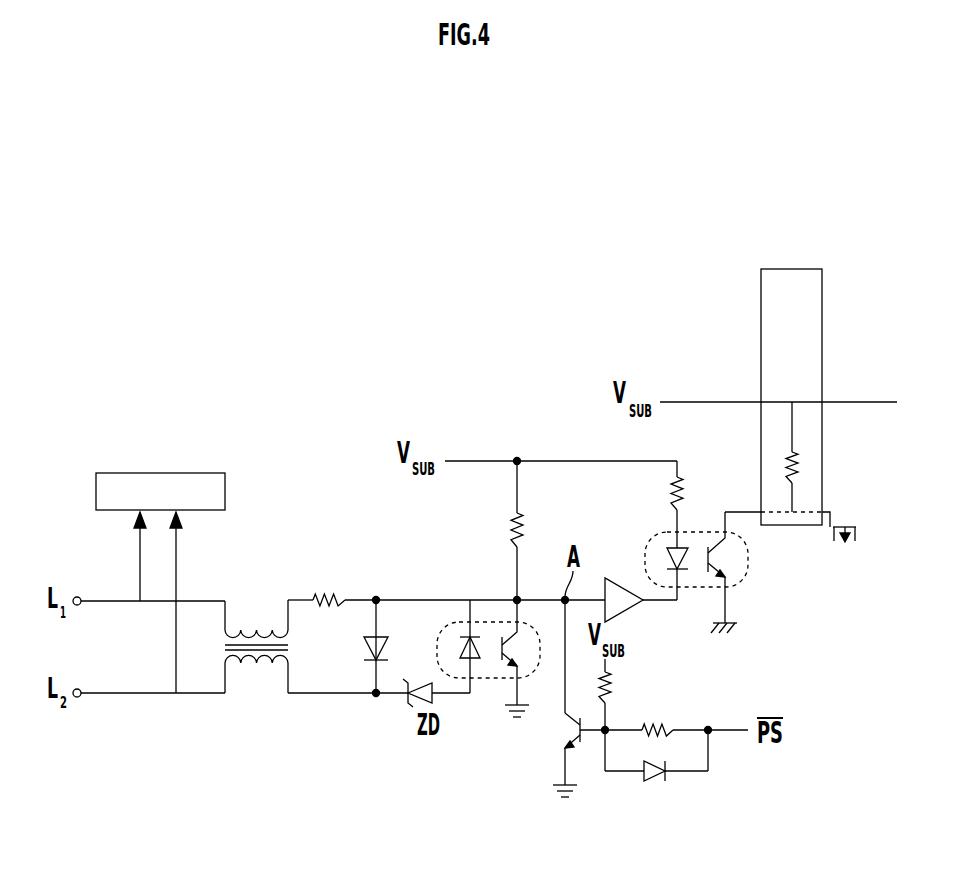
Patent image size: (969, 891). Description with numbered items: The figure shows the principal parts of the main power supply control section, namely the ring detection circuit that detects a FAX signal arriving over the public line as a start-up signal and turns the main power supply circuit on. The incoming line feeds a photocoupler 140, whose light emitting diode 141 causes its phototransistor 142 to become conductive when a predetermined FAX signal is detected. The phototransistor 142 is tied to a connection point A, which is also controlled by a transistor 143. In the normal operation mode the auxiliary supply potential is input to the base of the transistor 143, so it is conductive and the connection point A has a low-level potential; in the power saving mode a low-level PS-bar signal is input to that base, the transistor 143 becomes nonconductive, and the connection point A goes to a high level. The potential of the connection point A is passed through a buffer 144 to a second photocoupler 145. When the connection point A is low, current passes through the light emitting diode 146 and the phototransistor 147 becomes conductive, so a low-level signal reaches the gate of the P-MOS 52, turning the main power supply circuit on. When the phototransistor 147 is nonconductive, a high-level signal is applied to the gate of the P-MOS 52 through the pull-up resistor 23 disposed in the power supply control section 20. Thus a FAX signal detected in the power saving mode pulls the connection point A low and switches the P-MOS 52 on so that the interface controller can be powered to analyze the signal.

The power supply control section 20 is at (225, 473).
The pull-up resistor 23 is at (790, 460).
The P-MOS 52 is at (848, 524).
The photocoupler 140 is at (498, 652).
The light emitting diode 141 is at (461, 636).
The phototransistor 142 is at (522, 652).
The transistor 143 is at (565, 733).
The buffer 144 is at (628, 612).
The photocoupler 145 is at (708, 567).
The light emitting diode 146 is at (668, 551).
The phototransistor 147 is at (715, 557).